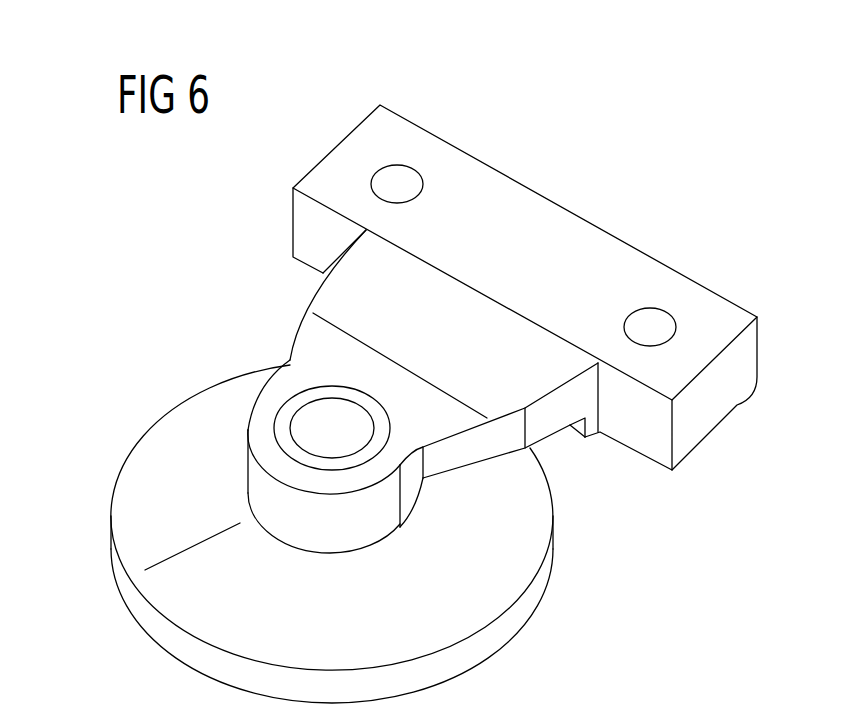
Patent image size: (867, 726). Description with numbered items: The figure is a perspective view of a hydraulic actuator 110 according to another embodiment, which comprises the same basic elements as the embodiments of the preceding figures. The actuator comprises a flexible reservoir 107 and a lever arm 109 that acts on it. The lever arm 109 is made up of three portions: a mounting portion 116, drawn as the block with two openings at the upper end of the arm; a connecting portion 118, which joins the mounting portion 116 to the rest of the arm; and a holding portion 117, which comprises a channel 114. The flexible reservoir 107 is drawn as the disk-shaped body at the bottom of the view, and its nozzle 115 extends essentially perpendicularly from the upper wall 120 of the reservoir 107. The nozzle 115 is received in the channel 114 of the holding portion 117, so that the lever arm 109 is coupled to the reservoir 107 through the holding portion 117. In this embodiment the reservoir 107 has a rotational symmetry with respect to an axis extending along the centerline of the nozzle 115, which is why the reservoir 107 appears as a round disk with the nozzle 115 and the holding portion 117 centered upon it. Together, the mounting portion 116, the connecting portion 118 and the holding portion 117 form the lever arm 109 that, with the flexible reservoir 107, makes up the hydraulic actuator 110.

The hydraulic actuator 110 is at (194, 219).
The mounting portion 116 is at (557, 223).
The connecting portion 118 is at (328, 290).
The lever arm 109 is at (483, 462).
The holding portion 117 is at (347, 545).
The nozzle 115 is at (368, 407).
The channel 114 is at (309, 419).
The upper wall 120 is at (515, 578).
The flexible reservoir 107 is at (437, 672).